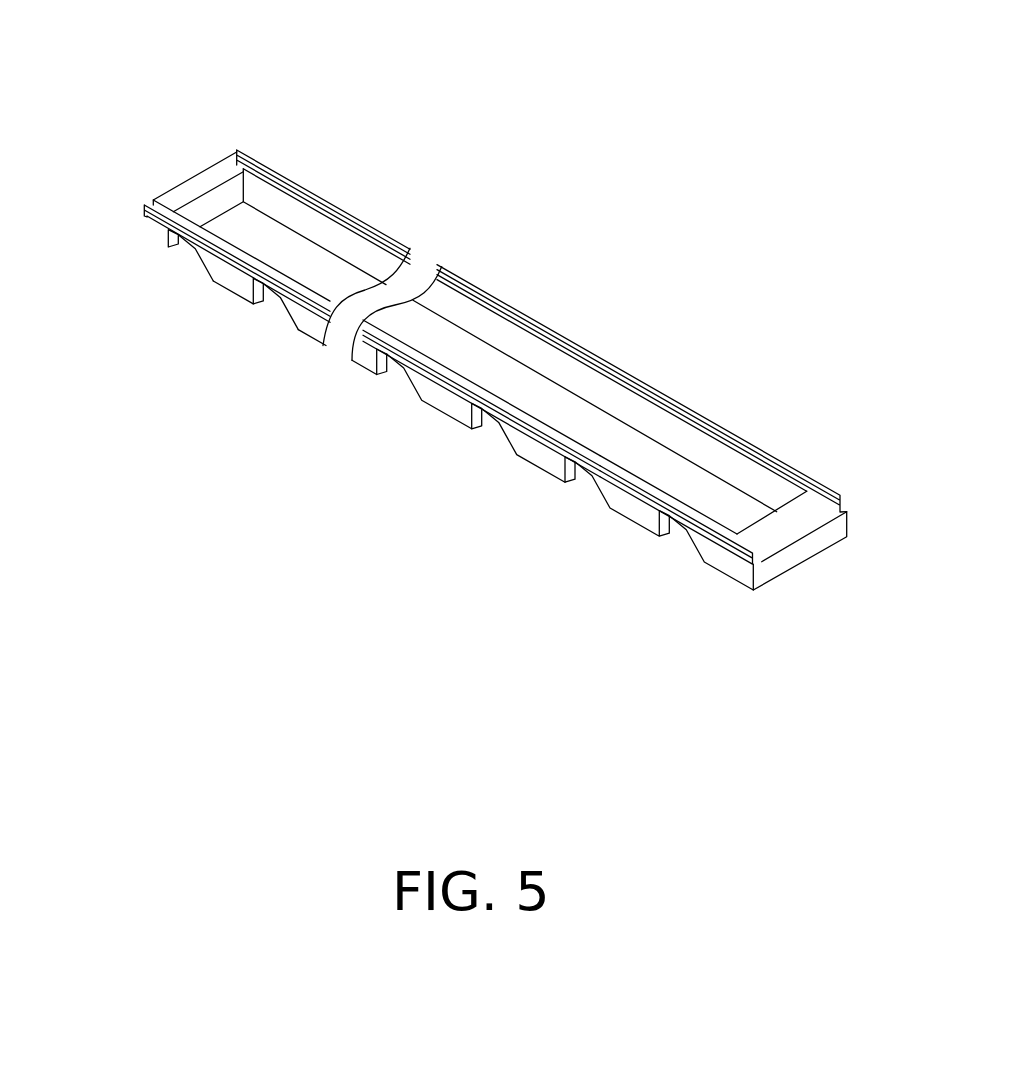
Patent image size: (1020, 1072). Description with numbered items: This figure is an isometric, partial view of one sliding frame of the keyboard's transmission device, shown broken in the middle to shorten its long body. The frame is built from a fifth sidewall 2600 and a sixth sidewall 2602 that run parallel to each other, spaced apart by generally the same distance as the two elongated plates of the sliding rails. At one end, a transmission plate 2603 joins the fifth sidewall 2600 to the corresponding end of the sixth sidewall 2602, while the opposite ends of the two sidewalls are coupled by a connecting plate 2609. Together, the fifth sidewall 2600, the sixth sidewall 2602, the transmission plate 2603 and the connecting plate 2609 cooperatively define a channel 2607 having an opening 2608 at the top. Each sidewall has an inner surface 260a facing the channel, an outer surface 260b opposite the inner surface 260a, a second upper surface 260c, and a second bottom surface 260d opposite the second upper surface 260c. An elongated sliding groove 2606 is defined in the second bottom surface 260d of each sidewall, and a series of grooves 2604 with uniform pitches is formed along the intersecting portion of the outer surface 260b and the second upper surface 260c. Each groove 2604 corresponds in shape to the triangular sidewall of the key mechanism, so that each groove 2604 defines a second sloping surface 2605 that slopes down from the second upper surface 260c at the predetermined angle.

The fifth sidewall 2600 is at (478, 348).
The sixth sidewall 2602 is at (178, 242).
The transmission plate 2603 is at (805, 553).
The grooves 2604 is at (398, 372).
The second sloping surface 2605 is at (423, 388).
The elongated sliding groove 2606 is at (743, 545).
The channel 2607 is at (478, 366).
The opening 2608 is at (218, 217).
The connecting plate 2609 is at (203, 190).
The inner surface 260a is at (545, 418).
The outer surface 260b is at (491, 422).
The second upper surface 260c is at (628, 520).
The second bottom surface 260d is at (647, 482).